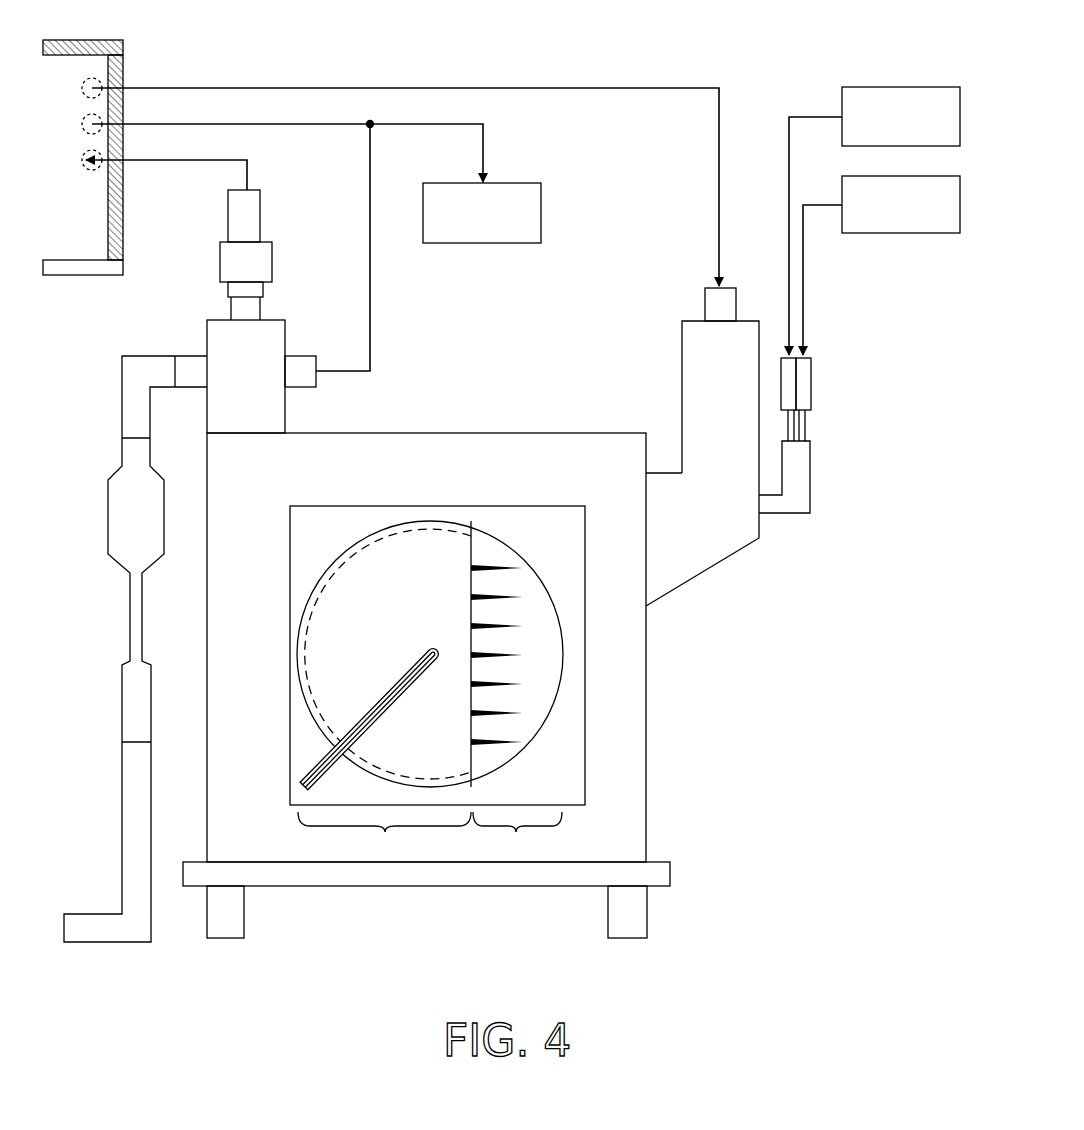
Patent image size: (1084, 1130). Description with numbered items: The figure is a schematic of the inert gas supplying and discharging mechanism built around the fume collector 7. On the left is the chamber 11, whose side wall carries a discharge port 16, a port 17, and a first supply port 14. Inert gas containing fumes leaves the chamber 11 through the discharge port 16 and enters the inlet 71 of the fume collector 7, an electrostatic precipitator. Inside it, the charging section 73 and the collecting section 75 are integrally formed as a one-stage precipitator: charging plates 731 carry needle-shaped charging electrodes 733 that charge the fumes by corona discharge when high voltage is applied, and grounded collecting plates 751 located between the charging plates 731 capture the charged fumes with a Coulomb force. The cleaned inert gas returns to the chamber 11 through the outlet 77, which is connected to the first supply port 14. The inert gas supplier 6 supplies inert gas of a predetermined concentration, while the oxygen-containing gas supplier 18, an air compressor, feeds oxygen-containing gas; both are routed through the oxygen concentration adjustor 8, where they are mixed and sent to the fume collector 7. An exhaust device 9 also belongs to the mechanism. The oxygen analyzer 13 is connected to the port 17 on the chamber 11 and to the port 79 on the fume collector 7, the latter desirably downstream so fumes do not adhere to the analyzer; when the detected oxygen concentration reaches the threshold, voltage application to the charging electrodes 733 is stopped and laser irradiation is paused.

The chamber 11 is at (100, 40).
The discharge port 16 is at (82, 86).
The port 17 is at (82, 122).
The first supply port 14 is at (82, 158).
The oxygen analyzer 13 is at (526, 188).
The oxygen-containing gas supplier 18 is at (922, 90).
The inert gas supplier 6 is at (922, 180).
The oxygen concentration adjustor 8 is at (845, 419).
The inlet 71 is at (706, 300).
The outlet 77 is at (262, 212).
The port 79 is at (304, 362).
The exhaust device 9 is at (108, 548).
The fume collector 7 is at (546, 380).
The collecting plates 751 is at (535, 710).
The collecting section 75 is at (384, 832).
The charging section 73 is at (517, 832).
The charging electrodes 733 is at (515, 567).
The charging plates 731 is at (378, 774).